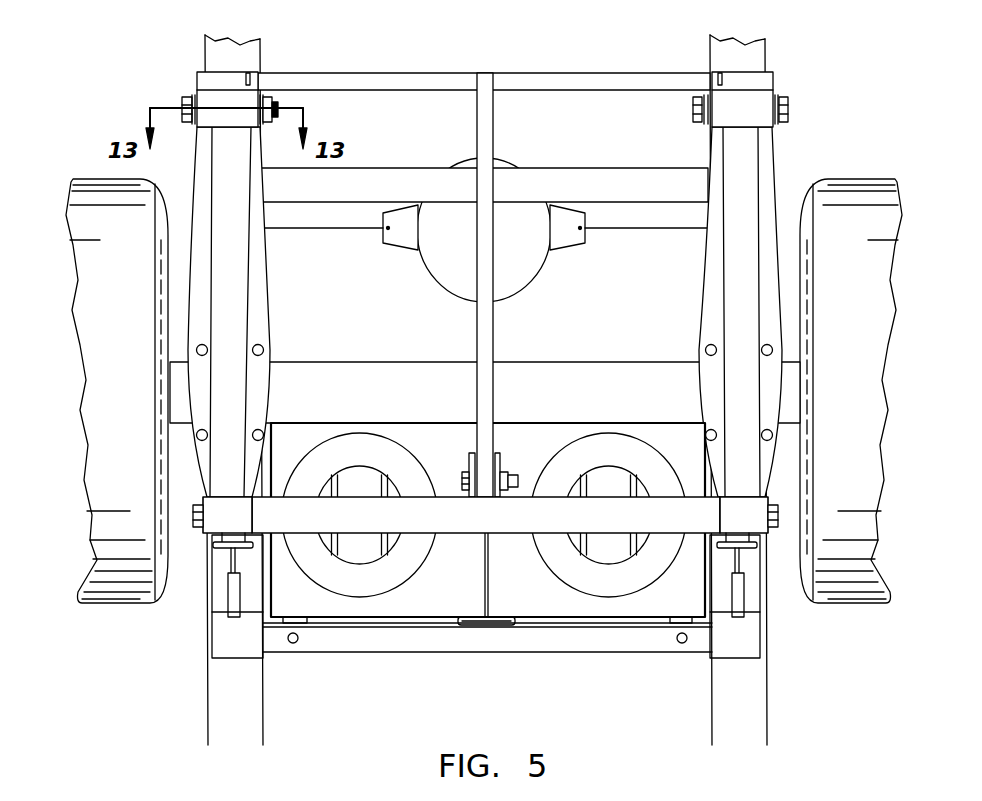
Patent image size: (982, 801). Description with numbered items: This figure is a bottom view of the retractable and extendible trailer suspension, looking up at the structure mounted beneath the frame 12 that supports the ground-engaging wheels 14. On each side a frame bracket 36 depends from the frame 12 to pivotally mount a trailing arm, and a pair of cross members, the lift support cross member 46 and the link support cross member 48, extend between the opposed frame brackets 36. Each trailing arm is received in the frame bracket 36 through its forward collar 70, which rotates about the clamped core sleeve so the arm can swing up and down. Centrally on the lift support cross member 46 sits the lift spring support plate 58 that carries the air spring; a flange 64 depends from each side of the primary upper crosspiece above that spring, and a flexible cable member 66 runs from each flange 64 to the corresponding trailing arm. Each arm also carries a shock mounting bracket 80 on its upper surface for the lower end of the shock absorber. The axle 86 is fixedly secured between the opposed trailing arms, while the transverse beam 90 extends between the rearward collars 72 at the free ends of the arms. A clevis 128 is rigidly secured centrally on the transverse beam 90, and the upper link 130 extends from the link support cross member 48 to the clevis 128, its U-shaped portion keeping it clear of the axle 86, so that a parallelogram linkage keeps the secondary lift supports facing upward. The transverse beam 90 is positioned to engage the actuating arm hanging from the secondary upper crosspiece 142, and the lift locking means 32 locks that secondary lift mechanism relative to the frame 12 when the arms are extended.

The frame 12 is at (253, 713).
The ground-engaging wheels 14 is at (877, 605).
The lift locking means 32 is at (477, 553).
The frame bracket 36 is at (773, 80).
The lift support cross member 46 is at (598, 175).
The link support cross member 48 is at (538, 80).
The lift spring support plate 58 is at (453, 215).
The flange 64 is at (578, 250).
The flexible cable member 66 is at (660, 228).
The forward collar 70 is at (232, 98).
The rearward collar 72 is at (207, 545).
The shock mounting bracket 80 is at (263, 336).
The axle 86 is at (412, 377).
The transverse beam 90 is at (522, 520).
The clevis 128 is at (500, 453).
The upper link 130 is at (490, 143).
The secondary upper crosspiece 142 is at (507, 597).